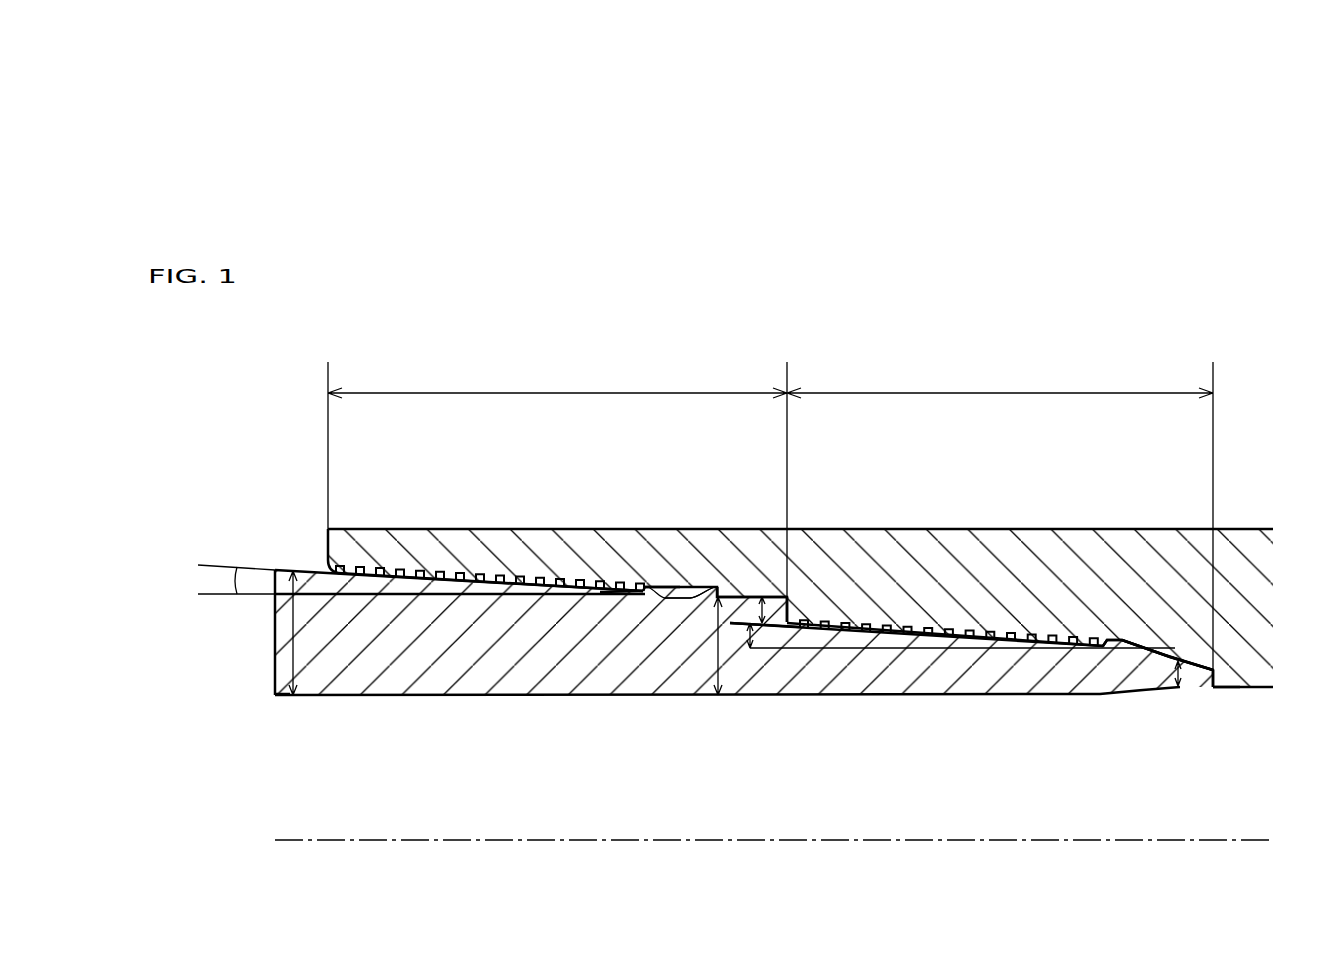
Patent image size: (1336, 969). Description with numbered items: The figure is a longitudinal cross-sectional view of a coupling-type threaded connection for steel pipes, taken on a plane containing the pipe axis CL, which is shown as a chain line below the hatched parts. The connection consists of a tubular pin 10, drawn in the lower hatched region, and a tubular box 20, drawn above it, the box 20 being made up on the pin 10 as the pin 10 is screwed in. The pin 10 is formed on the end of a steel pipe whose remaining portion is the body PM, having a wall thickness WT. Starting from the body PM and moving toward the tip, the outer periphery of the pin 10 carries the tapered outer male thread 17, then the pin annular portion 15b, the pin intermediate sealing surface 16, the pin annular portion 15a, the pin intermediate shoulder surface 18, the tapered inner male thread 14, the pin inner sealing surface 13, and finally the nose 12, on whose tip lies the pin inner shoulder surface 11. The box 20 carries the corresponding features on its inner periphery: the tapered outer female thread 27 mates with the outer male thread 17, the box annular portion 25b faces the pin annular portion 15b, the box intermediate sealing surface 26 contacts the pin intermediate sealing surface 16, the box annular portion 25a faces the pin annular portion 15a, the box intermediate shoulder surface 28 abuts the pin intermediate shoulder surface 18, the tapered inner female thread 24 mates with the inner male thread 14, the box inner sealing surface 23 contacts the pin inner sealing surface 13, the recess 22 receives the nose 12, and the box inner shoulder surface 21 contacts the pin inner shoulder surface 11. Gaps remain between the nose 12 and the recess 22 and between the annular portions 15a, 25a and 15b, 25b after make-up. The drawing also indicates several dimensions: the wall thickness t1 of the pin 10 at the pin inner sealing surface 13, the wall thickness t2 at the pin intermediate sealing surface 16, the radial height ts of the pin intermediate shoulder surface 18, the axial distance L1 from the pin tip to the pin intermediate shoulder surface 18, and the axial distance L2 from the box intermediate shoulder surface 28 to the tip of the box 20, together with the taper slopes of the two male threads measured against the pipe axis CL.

The pin 10 is at (352, 706).
The pin inner shoulder surface 11 is at (1211, 681).
The nose 12 is at (1188, 672).
The pin inner sealing surface 13 is at (1164, 660).
The inner male thread 14 is at (940, 644).
The pin annular portion 15a is at (776, 626).
The pin annular portion 15b is at (668, 598).
The pin intermediate sealing surface 16 is at (708, 598).
The outer male thread 17 is at (487, 600).
The pin intermediate shoulder surface 18 is at (797, 628).
The box 20 is at (1252, 525).
The box inner shoulder surface 21 is at (1222, 688).
The recess 22 is at (1205, 660).
The box inner sealing surface 23 is at (1168, 657).
The inner female thread 24 is at (935, 630).
The box annular portion 25a is at (770, 596).
The box annular portion 25b is at (680, 587).
The box intermediate sealing surface 26 is at (727, 597).
The outer female thread 27 is at (489, 577).
The box intermediate shoulder surface 28 is at (797, 607).
The wall thickness at pin inner sealing surface t1 is at (1177, 676).
The wall thickness at pin intermediate sealing surface t2 is at (688, 600).
The height of pin intermediate shoulder surface ts is at (719, 696).
The wall thickness of pipe body WT is at (292, 635).
The body of steel pipe PM is at (282, 674).
The distance between pin tip and pin intermediate shoulder surface L1 is at (1000, 520).
The distance between box intermediate shoulder surface and box tip L2 is at (557, 475).
The pipe axis CL is at (795, 839).